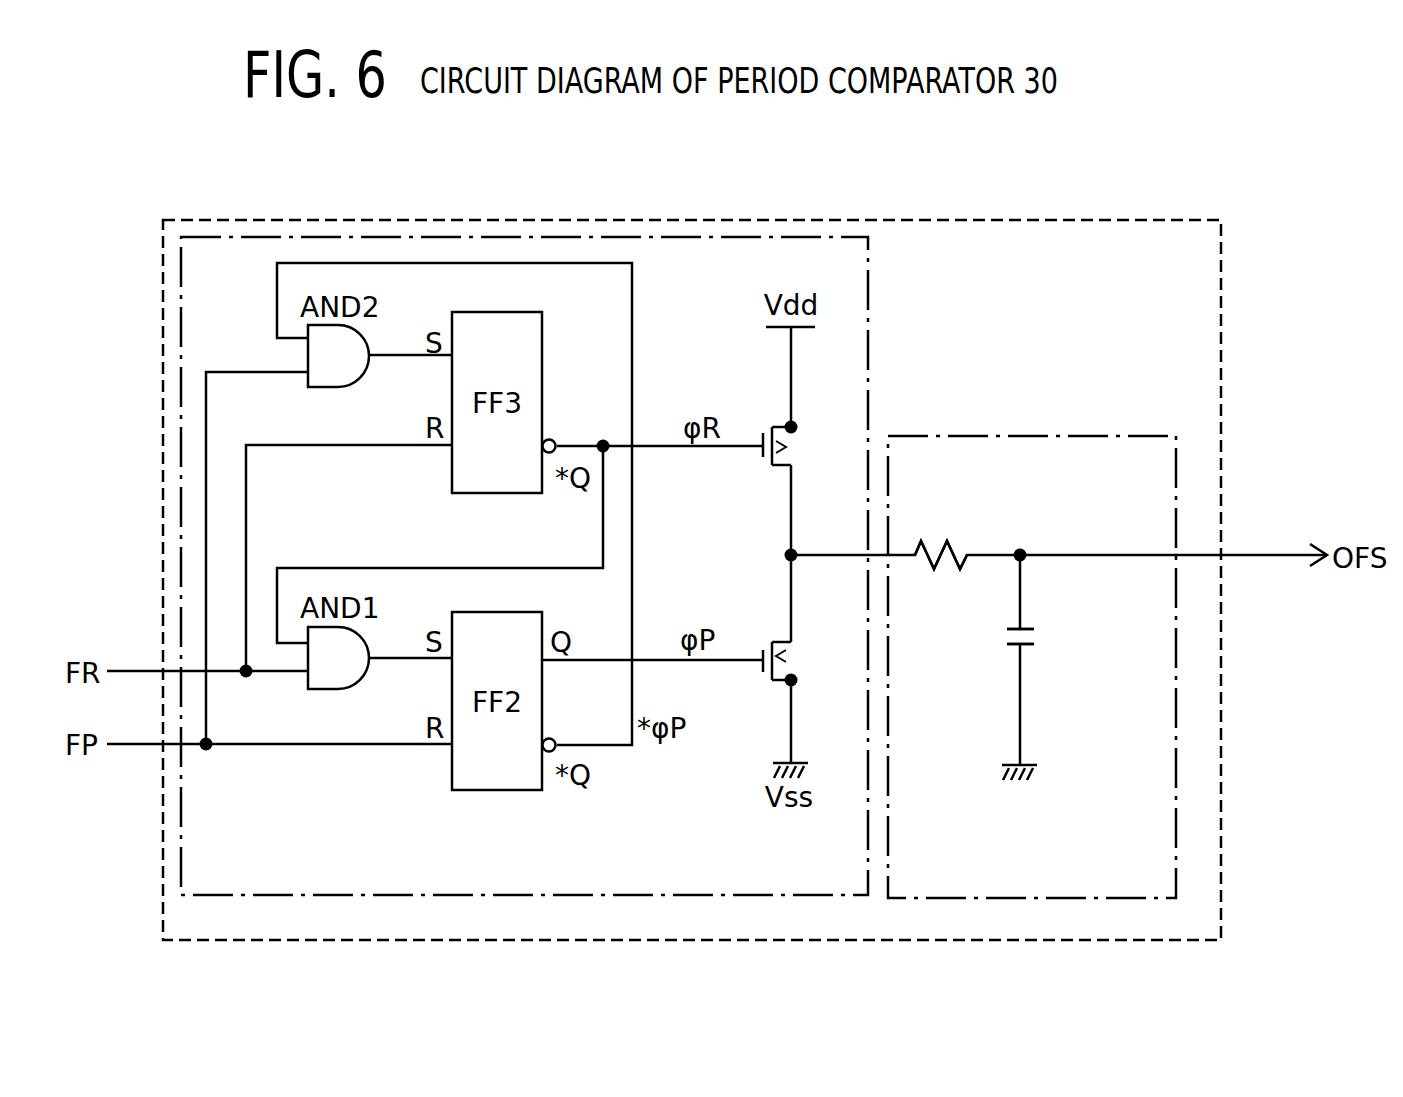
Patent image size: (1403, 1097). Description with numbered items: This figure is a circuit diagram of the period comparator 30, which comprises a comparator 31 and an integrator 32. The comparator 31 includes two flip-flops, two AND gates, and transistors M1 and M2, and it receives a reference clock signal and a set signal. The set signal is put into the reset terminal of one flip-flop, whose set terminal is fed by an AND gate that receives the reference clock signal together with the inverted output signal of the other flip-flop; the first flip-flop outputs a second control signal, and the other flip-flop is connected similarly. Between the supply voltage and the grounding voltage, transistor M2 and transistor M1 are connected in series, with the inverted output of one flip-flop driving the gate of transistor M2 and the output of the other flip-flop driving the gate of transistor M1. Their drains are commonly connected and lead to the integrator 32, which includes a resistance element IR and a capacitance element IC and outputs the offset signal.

The period comparator 30 is at (997, 220).
The comparator 31 is at (868, 265).
The integrator 32 is at (1108, 436).
The transistor M1 is at (795, 655).
The transistor M2 is at (797, 448).
The resistance element IR is at (944, 538).
The capacitance element IC is at (1036, 636).